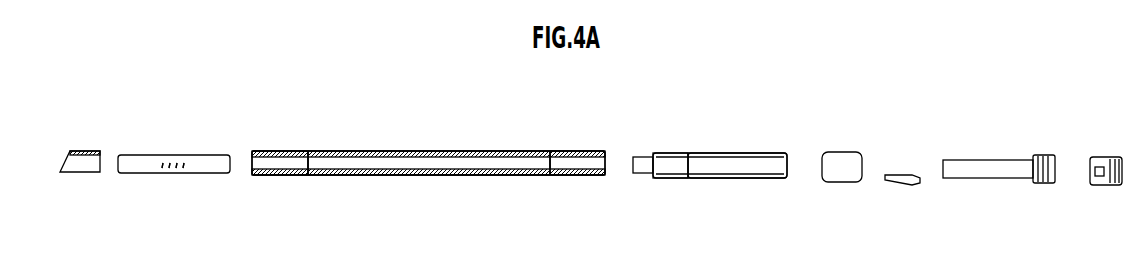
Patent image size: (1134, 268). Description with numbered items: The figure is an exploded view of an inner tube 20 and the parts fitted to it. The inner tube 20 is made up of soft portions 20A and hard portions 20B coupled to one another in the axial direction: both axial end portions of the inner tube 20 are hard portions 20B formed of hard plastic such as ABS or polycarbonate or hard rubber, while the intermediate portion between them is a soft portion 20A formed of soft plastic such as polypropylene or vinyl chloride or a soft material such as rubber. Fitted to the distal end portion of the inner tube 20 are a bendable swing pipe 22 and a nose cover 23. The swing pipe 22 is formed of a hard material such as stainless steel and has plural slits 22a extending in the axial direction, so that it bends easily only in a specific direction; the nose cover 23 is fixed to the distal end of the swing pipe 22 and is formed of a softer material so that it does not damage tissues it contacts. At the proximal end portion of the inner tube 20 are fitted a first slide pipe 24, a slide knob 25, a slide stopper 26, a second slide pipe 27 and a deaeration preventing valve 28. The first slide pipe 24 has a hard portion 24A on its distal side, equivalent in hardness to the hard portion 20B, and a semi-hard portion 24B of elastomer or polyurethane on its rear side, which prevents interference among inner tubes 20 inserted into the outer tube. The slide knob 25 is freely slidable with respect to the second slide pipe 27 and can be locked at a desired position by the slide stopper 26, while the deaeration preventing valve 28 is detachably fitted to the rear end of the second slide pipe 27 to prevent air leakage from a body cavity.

The inner tube 20 is at (427, 136).
The soft portion 20A is at (426, 177).
The hard portion 20B is at (278, 177).
The swing pipe 22 is at (175, 155).
The slits 22a is at (192, 174).
The nose cover 23 is at (84, 150).
The first slide pipe 24 is at (720, 141).
The hard portion 24A is at (667, 178).
The semi-hard portion 24B is at (742, 178).
The slide knob 25 is at (841, 158).
The slide stopper 26 is at (908, 188).
The second slide pipe 27 is at (993, 165).
The deaeration preventing valve 28 is at (1103, 160).